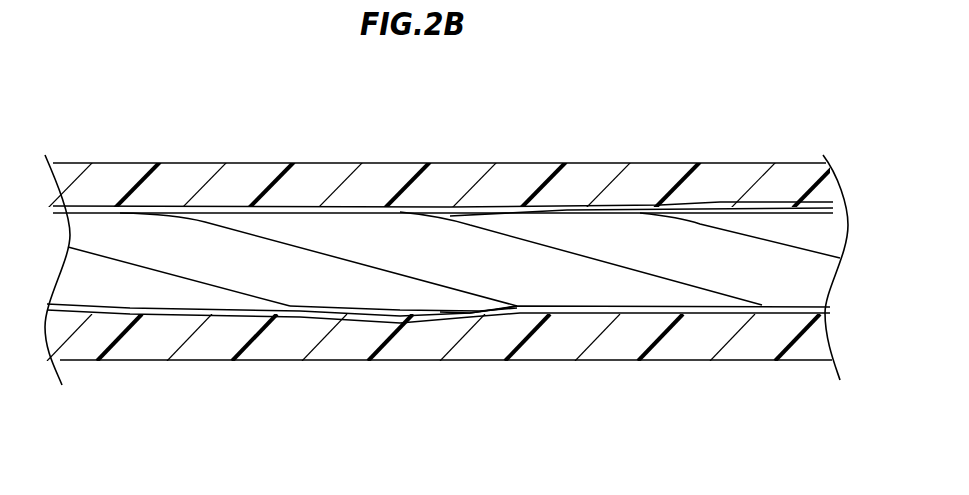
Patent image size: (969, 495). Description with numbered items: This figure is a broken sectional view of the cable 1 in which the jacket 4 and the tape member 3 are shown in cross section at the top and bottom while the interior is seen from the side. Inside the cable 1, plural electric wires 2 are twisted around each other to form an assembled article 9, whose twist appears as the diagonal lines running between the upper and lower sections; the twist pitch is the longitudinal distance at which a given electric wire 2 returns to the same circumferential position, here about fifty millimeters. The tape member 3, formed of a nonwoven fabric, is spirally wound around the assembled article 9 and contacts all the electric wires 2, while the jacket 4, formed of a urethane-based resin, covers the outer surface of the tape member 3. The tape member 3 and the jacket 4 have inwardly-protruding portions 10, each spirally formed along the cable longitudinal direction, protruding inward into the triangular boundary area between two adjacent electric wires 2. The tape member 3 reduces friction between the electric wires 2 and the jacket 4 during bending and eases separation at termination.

The cable 1 is at (155, 135).
The electric wires 2 is at (548, 205).
The tape member 3 is at (342, 206).
The jacket 4 is at (785, 175).
The assembled article 9 is at (318, 293).
The inwardly-protruding portion 10 is at (502, 313).